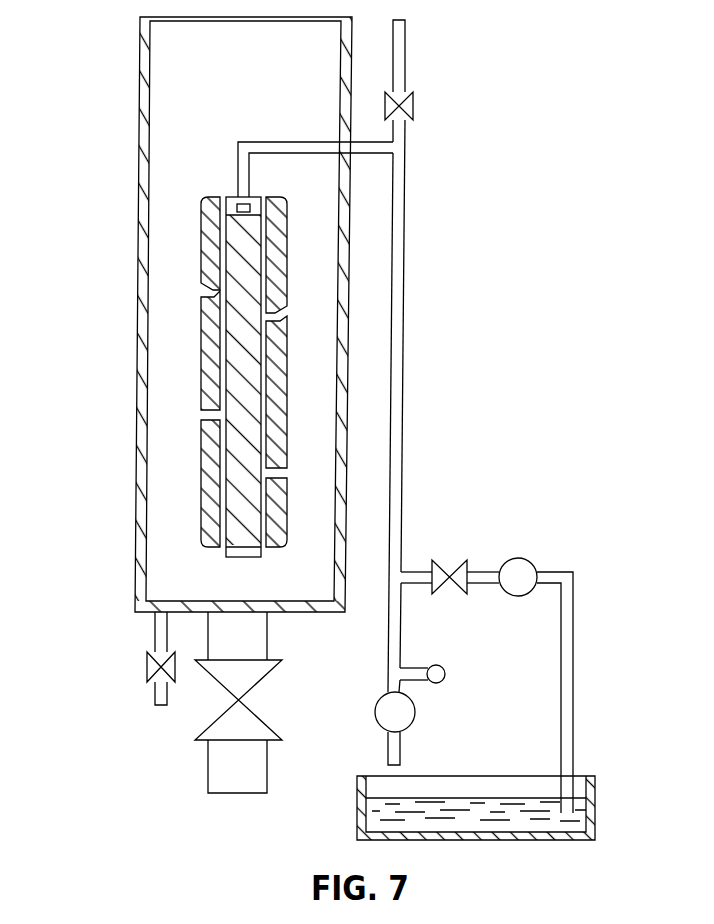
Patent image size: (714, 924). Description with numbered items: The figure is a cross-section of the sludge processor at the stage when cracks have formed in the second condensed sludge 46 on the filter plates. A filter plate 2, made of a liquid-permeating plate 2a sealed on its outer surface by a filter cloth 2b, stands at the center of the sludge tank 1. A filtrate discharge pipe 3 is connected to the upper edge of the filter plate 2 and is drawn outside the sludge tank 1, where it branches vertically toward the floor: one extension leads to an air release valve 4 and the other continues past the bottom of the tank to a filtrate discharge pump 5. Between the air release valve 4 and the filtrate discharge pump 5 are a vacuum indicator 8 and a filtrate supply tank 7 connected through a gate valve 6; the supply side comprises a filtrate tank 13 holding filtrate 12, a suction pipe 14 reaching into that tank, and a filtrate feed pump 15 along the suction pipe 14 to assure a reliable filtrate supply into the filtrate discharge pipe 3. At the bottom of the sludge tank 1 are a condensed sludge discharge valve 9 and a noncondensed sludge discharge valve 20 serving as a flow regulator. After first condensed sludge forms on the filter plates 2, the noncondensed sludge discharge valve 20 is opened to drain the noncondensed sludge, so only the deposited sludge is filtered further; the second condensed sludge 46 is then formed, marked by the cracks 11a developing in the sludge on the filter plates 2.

The sludge tank 1 is at (135, 503).
The filter plate 2 is at (150, 377).
The liquid-permeating plate 2a is at (232, 450).
The filter cloth 2b is at (167, 372).
The second condensed sludge 46 is at (207, 232).
The cracks 11a is at (205, 290).
The filtrate discharge pipe 3 is at (404, 330).
The air release valve 4 is at (405, 108).
The filtrate discharge pump 5 is at (415, 713).
The gate valve 6 is at (440, 563).
The filtrate supply tank 7 is at (494, 676).
The vacuum indicator 8 is at (445, 669).
The condensed sludge discharge valve 9 is at (262, 718).
The filtrate 12 is at (372, 813).
The filtrate tank 13 is at (595, 805).
The suction pipe 14 is at (573, 677).
The filtrate feed pump 15 is at (533, 561).
The noncondensed sludge discharge valve 20 is at (158, 670).